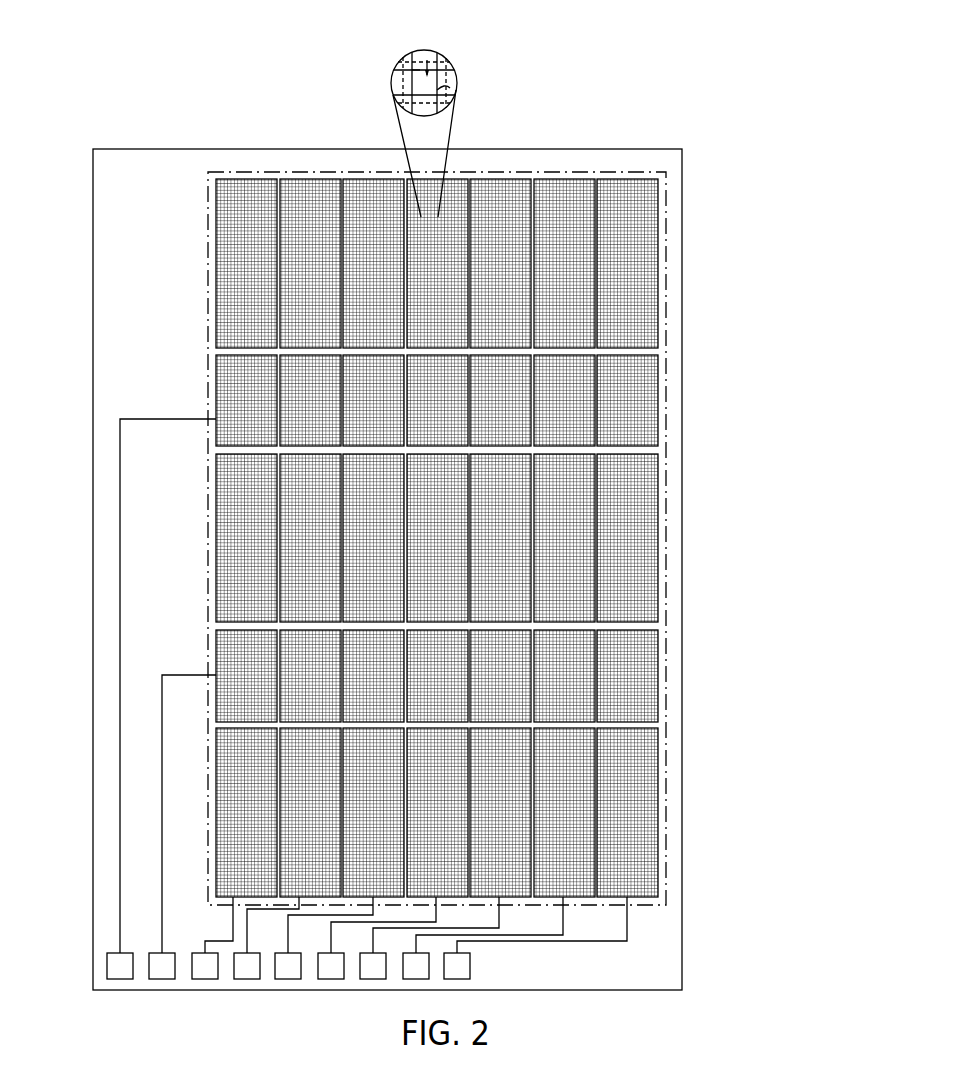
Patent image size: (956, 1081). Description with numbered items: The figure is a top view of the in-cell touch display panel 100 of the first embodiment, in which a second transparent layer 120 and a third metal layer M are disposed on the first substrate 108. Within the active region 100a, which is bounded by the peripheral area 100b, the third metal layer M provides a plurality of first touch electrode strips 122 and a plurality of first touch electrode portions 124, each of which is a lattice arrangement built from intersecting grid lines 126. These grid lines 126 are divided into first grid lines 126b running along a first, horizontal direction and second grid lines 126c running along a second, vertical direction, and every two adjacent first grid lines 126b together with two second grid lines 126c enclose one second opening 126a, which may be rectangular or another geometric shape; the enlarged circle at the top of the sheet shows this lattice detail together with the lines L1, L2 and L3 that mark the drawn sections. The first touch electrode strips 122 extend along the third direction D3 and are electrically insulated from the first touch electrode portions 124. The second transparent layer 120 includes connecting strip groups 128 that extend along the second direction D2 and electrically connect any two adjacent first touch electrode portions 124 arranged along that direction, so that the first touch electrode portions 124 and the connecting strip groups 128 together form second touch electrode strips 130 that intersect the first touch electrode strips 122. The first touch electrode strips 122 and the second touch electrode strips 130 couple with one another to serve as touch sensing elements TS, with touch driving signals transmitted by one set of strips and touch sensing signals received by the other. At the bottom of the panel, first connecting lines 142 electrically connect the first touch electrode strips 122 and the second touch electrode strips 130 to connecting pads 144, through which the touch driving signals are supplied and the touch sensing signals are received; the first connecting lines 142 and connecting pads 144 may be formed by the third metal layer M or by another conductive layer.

The in-cell touch display panel 100 is at (666, 118).
The active region 100a is at (664, 223).
The peripheral area 100b is at (677, 167).
The first substrate 108 is at (142, 163).
The second transparent layer 120 is at (723, 632).
The first touch electrode strips 122 is at (212, 381).
The first touch electrode portions 124 is at (313, 179).
The grid lines 126 is at (488, 195).
The second openings 126a is at (428, 66).
The first grid lines 126b is at (418, 66).
The second grid lines 126c is at (450, 88).
The connecting strip groups 128 is at (645, 660).
The second touch electrode strips 130 is at (246, 170).
The first connecting lines 142 is at (165, 907).
The connecting pads 144 is at (163, 975).
The touch sensing elements TS is at (288, 103).
The third metal layer M is at (175, 661).
The first line L1 is at (648, 386).
The second line L2 is at (403, 80).
The third line L3 is at (602, 345).
The second direction D2 is at (698, 1008).
The third direction D3 is at (698, 1008).